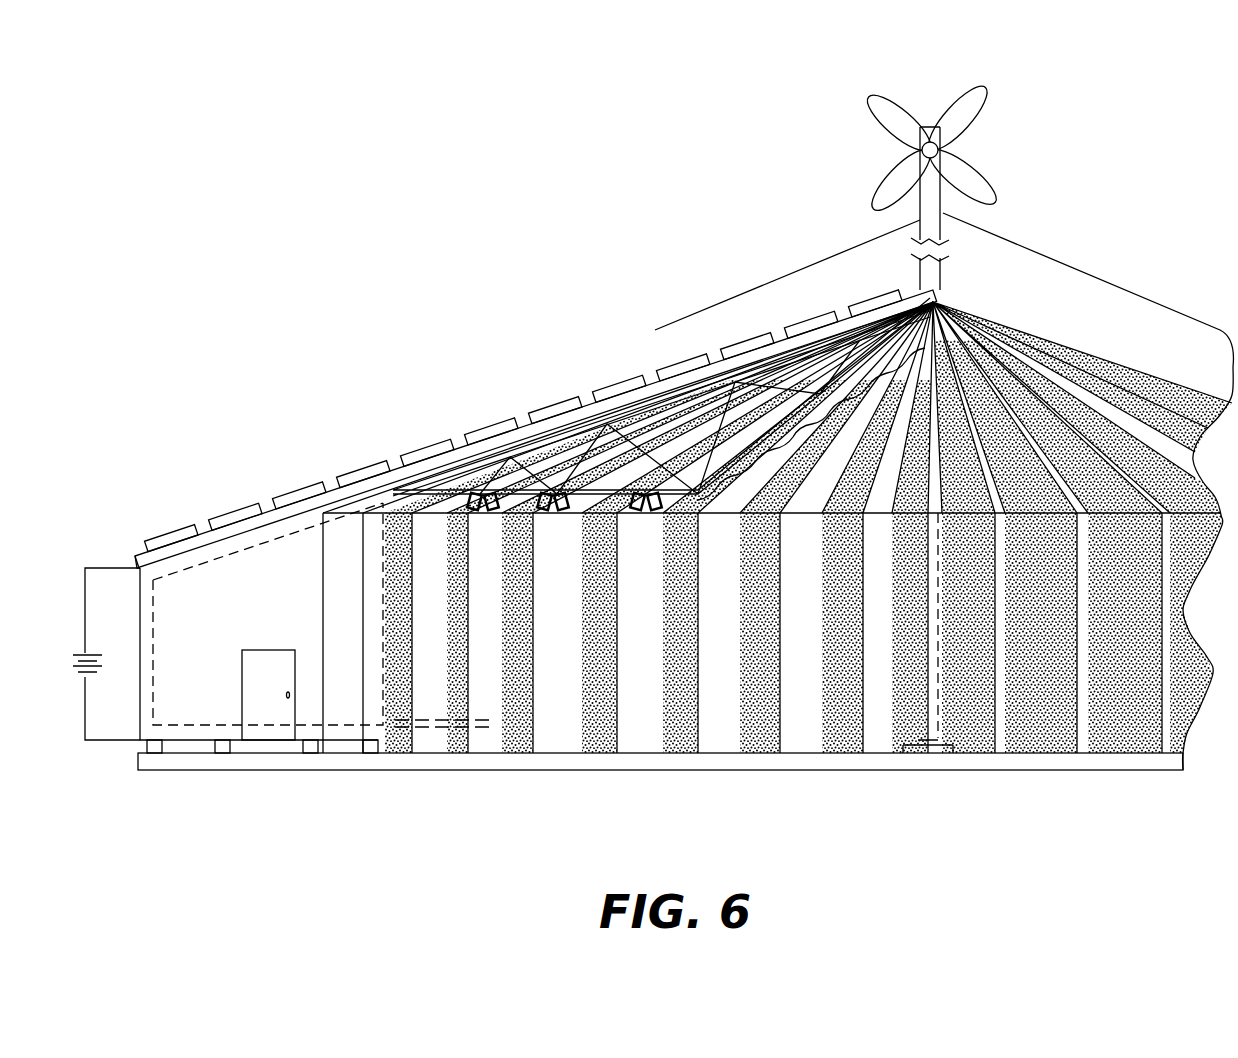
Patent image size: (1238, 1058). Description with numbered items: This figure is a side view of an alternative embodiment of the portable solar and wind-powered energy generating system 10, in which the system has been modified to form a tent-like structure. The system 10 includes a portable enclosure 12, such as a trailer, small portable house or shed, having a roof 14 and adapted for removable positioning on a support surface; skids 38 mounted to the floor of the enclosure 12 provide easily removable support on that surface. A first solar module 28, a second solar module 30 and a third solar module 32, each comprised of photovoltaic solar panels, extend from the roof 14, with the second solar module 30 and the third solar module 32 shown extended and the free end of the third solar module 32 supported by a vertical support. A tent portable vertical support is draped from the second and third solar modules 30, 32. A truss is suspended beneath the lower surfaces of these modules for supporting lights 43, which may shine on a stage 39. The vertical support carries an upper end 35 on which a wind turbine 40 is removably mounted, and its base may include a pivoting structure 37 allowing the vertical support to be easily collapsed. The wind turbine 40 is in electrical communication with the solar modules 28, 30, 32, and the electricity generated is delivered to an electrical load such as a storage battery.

The portable solar and wind-powered energy generating system 10 is at (653, 459).
The portable enclosure 12 is at (253, 604).
The roof 14 is at (172, 555).
The first solar module 28 is at (134, 524).
The second solar module 30 is at (386, 413).
The third solar module 32 is at (661, 353).
The upper end 35 is at (921, 157).
The pivoting structure 37 is at (894, 722).
The skids 38 is at (415, 742).
The stage 39 is at (470, 722).
The wind turbine 40 is at (973, 182).
The lights 43 is at (640, 540).